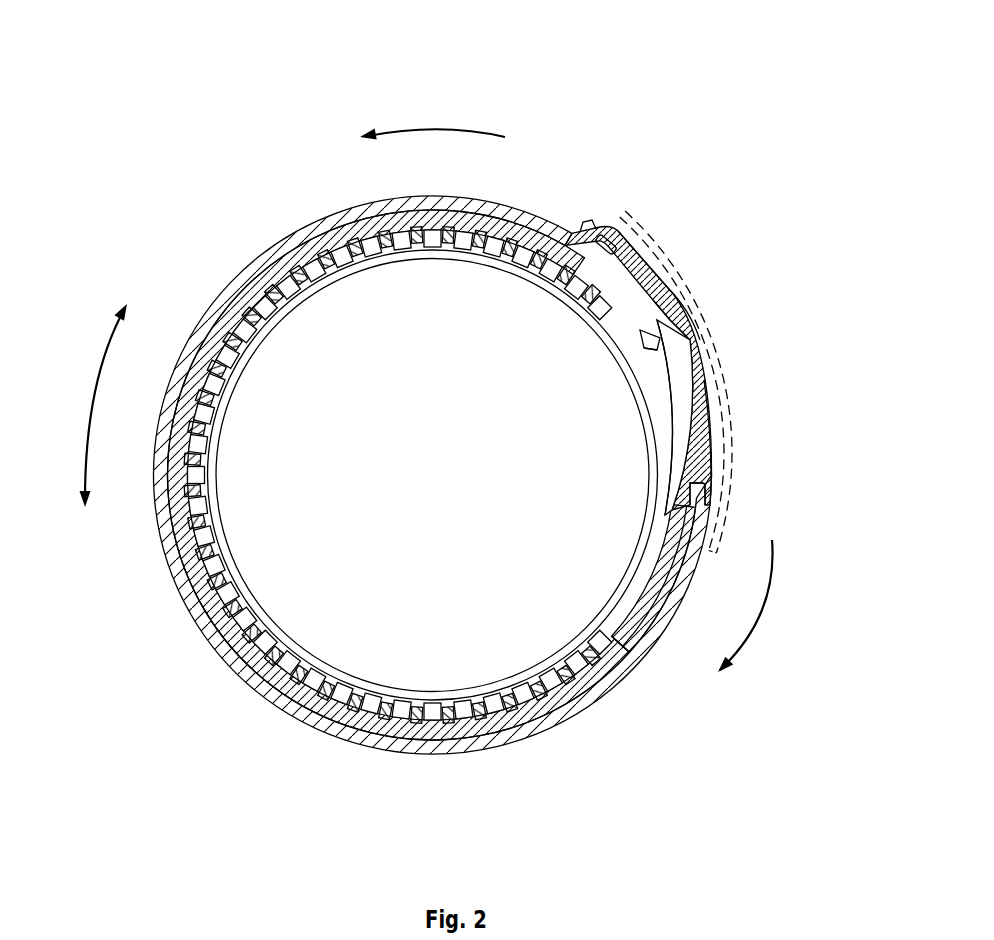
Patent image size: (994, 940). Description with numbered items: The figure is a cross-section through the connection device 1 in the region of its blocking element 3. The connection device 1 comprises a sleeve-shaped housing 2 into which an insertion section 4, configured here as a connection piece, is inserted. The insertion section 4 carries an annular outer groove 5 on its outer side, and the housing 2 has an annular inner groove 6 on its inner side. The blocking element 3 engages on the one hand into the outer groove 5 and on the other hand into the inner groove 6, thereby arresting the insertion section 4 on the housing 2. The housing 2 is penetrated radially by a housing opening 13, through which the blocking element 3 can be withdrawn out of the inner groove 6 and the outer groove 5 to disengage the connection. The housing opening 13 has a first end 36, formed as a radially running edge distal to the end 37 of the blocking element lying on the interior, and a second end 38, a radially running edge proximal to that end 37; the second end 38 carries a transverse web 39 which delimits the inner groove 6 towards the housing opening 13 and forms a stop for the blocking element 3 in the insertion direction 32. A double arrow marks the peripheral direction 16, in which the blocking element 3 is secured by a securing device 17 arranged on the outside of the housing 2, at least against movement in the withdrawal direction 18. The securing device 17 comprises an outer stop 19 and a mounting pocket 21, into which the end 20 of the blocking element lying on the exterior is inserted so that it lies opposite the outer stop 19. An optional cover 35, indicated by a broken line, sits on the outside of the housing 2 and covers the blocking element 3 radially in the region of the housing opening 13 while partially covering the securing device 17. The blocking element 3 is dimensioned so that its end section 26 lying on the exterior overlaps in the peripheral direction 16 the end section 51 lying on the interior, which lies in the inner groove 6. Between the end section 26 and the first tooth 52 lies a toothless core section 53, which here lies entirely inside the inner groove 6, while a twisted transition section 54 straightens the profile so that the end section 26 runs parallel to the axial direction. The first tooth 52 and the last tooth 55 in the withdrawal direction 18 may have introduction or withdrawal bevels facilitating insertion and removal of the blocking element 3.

The connection device 1 is at (441, 390).
The housing 2 is at (272, 240).
The blocking element 3 is at (710, 357).
The insertion section 4 is at (386, 268).
The outer groove 5 is at (278, 300).
The inner groove 6 is at (257, 287).
The housing opening 13 is at (678, 392).
The peripheral direction 16 is at (92, 402).
The securing device 17 is at (695, 250).
The withdrawal direction 18 is at (438, 127).
The outer stop 19 is at (588, 224).
The end lying on the exterior 20 is at (612, 240).
The mounting pocket 21 is at (632, 237).
The end section lying on the exterior 26 is at (690, 293).
The insertion direction 32 is at (760, 610).
The cover 35 is at (723, 500).
The first end of the housing opening 36 is at (690, 467).
The end lying on the interior 37 is at (655, 350).
The second end of the housing opening 38 is at (692, 377).
The transverse web 39 is at (657, 387).
The end section lying on the interior 51 is at (690, 325).
The first tooth 52 is at (637, 640).
The toothless core section 53 is at (663, 563).
The twisted transition section 54 is at (690, 432).
The last tooth 55 is at (650, 349).